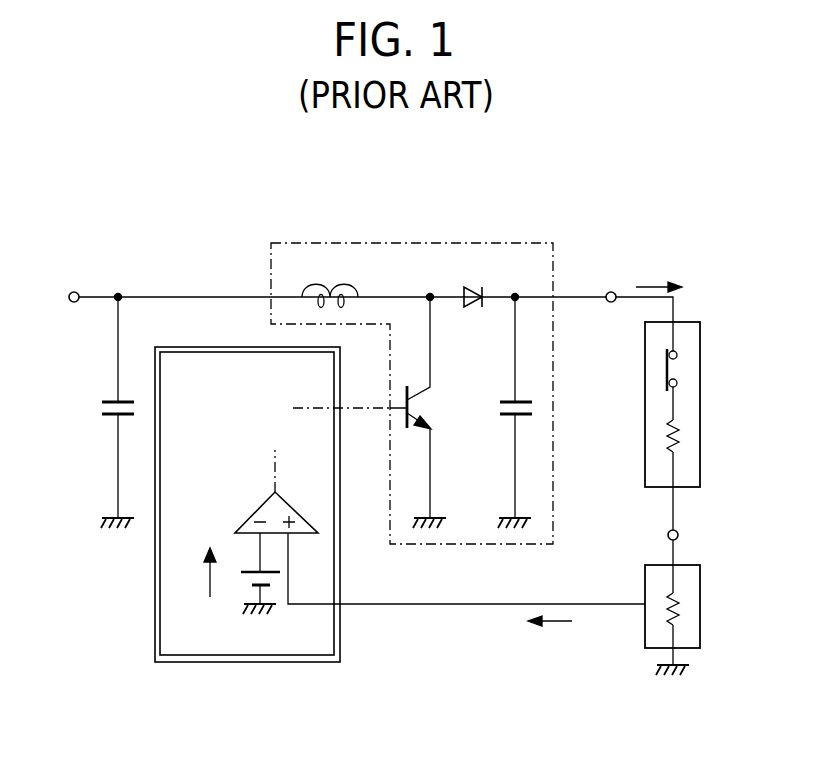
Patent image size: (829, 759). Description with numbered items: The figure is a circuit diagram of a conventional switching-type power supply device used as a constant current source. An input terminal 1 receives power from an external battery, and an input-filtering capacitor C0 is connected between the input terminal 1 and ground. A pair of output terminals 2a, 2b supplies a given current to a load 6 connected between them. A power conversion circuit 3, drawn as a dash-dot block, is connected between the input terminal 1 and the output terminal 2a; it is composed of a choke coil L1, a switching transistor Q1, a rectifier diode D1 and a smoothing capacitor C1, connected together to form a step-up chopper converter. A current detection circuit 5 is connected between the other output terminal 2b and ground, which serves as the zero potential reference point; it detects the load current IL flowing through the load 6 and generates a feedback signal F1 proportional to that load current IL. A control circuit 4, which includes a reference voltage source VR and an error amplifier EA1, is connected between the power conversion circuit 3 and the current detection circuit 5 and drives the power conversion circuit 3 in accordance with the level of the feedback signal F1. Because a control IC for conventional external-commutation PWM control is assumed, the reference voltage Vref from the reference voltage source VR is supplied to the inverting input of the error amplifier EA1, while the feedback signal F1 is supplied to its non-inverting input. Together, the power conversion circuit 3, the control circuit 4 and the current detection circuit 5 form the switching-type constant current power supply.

The input terminal 1 is at (74, 292).
The power conversion circuit 3 is at (266, 271).
The input-filtering capacitor C0 is at (98, 408).
The choke coil L1 is at (326, 290).
The rectifier diode D1 is at (474, 290).
The switching transistor Q1 is at (436, 401).
The smoothing capacitor C1 is at (498, 414).
The output terminal 2a is at (611, 292).
The load current IL is at (652, 285).
The load 6 is at (700, 352).
The output terminal 2b is at (678, 534).
The current detection circuit 5 is at (700, 612).
The feedback signal F1 is at (553, 626).
The control circuit 4 is at (247, 664).
The error amplifier EA1 is at (250, 516).
The reference voltage source VR is at (246, 584).
The reference voltage Vref is at (206, 592).